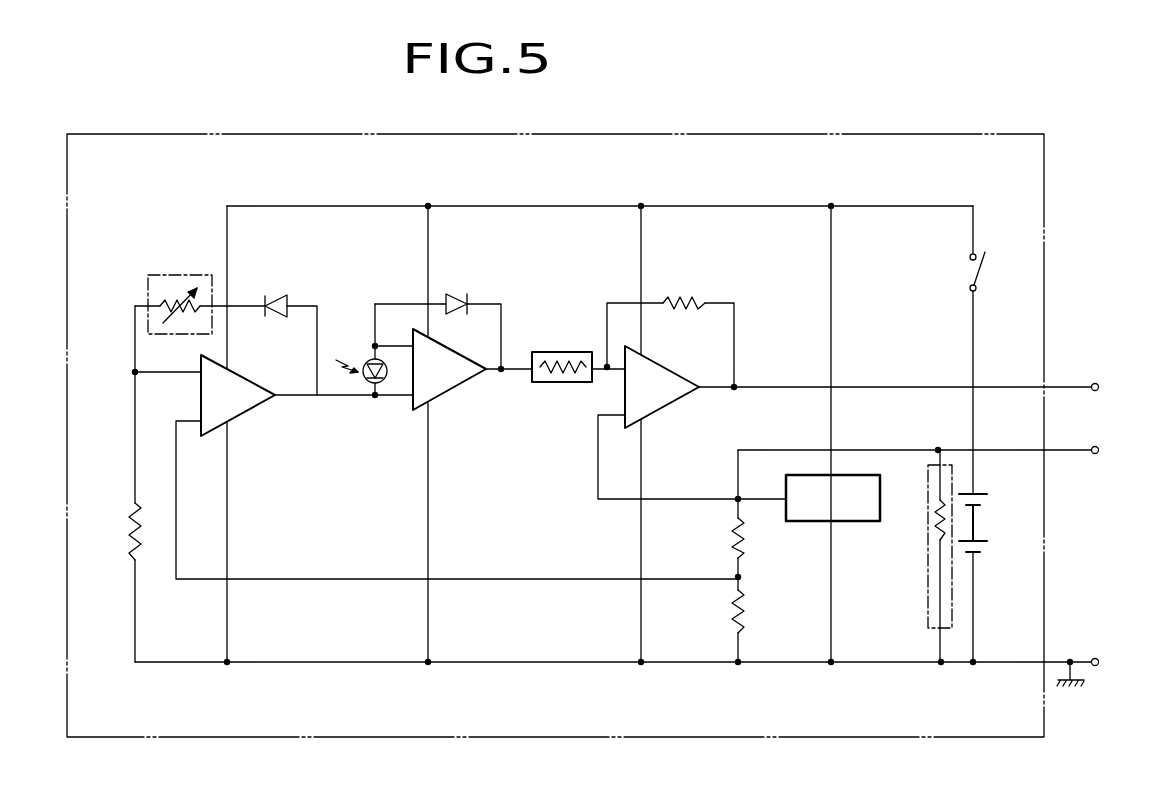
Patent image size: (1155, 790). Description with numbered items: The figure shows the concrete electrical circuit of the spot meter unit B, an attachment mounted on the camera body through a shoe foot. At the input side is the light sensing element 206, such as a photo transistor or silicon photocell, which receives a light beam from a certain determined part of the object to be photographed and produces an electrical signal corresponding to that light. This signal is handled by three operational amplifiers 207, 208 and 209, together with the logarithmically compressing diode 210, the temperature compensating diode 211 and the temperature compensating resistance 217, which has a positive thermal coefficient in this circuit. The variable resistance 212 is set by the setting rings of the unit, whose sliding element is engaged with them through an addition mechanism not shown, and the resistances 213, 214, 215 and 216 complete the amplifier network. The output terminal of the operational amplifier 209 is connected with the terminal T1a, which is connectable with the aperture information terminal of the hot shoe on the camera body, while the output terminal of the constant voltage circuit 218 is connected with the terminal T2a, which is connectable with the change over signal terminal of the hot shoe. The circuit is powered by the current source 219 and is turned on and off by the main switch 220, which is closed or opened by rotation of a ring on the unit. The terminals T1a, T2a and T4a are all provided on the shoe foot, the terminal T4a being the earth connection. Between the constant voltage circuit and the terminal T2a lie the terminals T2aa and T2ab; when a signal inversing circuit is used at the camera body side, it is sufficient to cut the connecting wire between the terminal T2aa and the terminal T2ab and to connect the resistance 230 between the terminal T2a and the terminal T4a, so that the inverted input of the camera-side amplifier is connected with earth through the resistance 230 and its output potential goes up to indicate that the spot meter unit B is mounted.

The light sensing element 206 is at (362, 366).
The operational amplifier 207 is at (243, 417).
The operational amplifier 208 is at (450, 398).
The operational amplifier 209 is at (663, 405).
The logarithmically compressing diode 210 is at (438, 320).
The temperature compensating diode 211 is at (277, 306).
The variable resistance 212 is at (176, 286).
The resistance 213 is at (120, 532).
The resistance 214 is at (757, 520).
The resistance 215 is at (757, 626).
The resistance 216 is at (670, 332).
The temperature compensating resistance 217 is at (578, 355).
The constant voltage circuit 218 is at (833, 498).
The current source 219 is at (986, 475).
The main switch 220 is at (959, 248).
The resistance 230 is at (929, 550).
The spot meter unit B is at (619, 147).
The terminal T1a is at (1118, 386).
The terminal T2a is at (940, 449).
The terminal T4a is at (1100, 666).
The terminal T2aa is at (738, 499).
The terminal T2ab is at (938, 449).